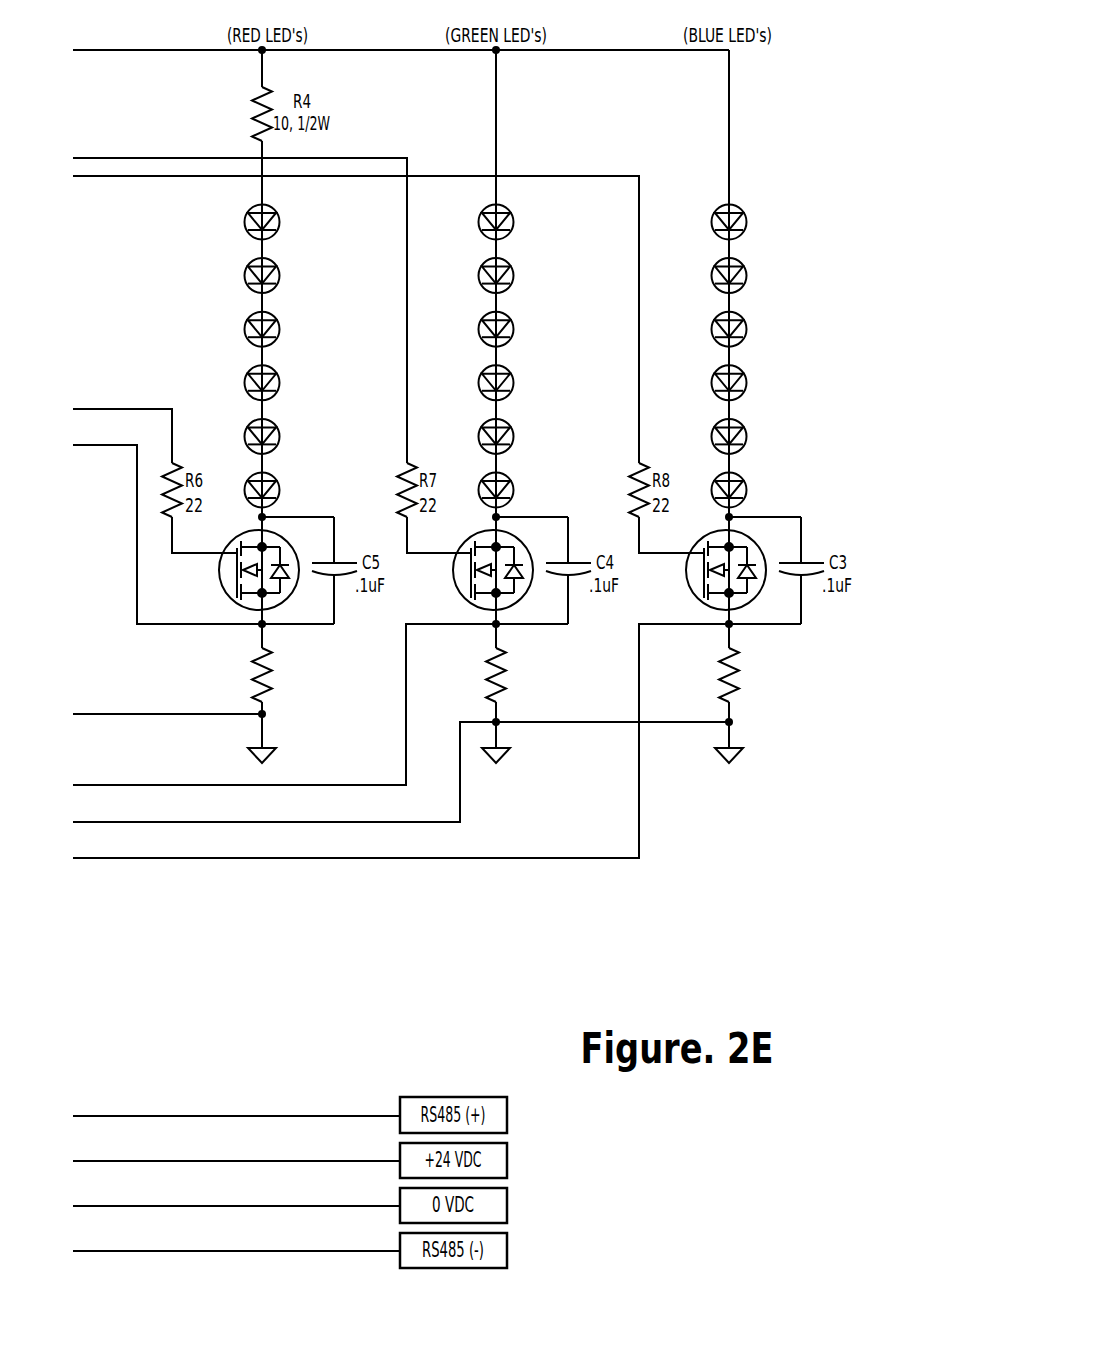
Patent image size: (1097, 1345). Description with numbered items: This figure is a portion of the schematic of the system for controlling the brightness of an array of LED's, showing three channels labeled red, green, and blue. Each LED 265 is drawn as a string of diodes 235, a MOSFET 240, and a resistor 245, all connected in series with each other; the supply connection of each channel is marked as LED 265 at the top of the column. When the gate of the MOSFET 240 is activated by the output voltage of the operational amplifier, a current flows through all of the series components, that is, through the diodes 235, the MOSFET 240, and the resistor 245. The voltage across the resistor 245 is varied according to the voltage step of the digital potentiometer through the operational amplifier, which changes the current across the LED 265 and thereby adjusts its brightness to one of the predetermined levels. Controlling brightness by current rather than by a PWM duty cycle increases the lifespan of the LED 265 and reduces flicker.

The LED 265 is at (264, 53).
The diodes 235 is at (247, 231).
The MOSFET 240 is at (226, 592).
The resistor 245 is at (256, 678).